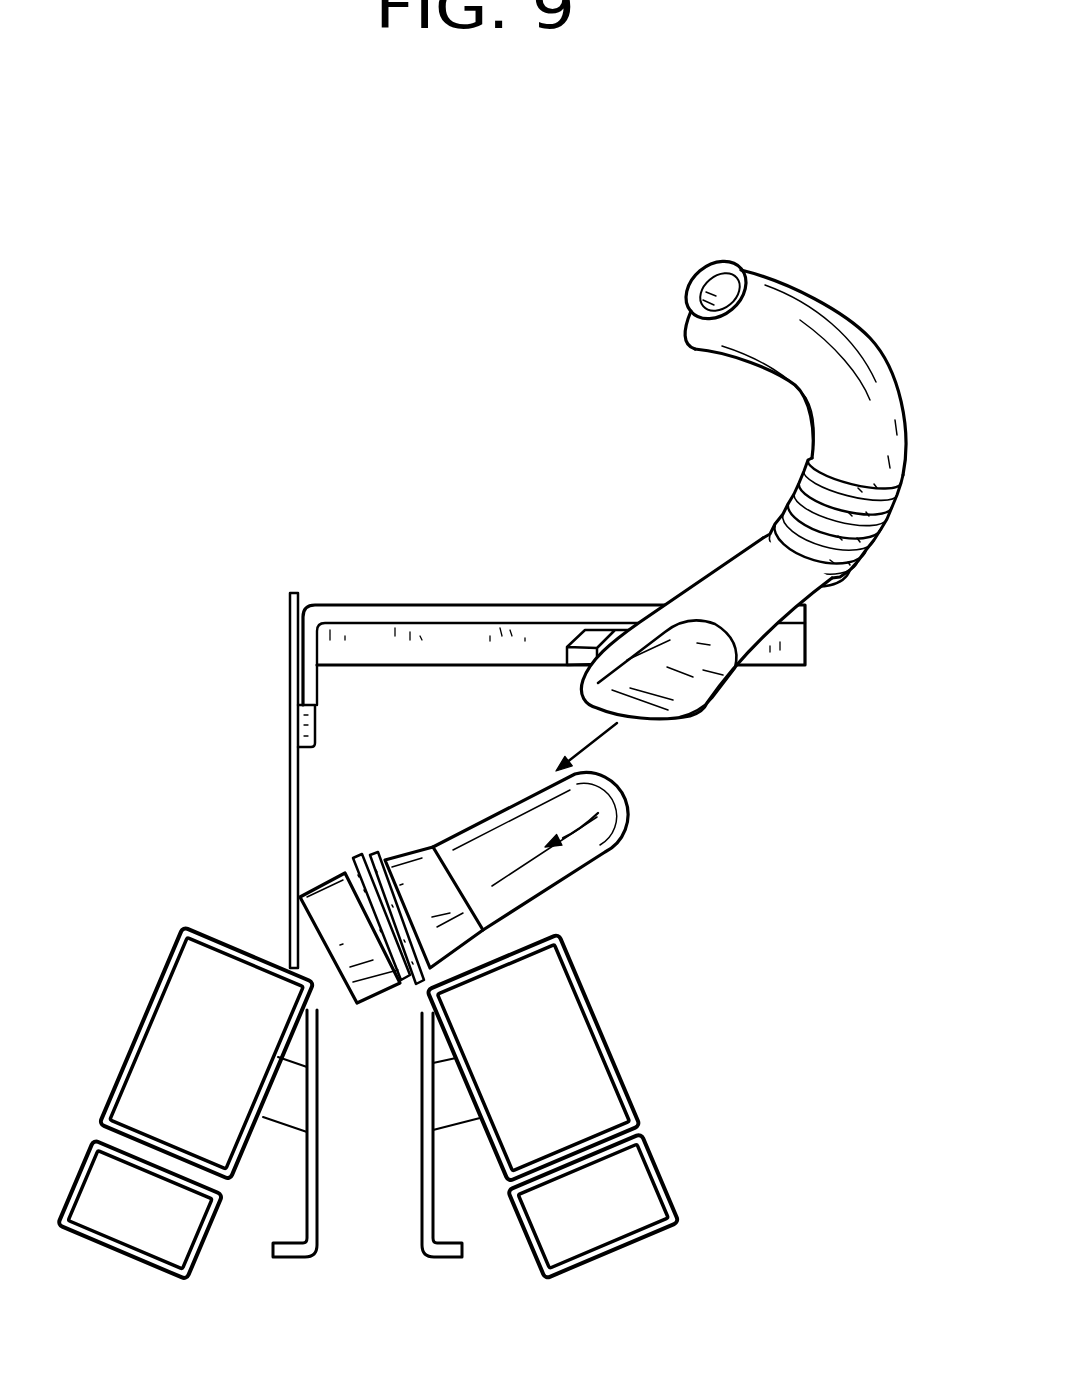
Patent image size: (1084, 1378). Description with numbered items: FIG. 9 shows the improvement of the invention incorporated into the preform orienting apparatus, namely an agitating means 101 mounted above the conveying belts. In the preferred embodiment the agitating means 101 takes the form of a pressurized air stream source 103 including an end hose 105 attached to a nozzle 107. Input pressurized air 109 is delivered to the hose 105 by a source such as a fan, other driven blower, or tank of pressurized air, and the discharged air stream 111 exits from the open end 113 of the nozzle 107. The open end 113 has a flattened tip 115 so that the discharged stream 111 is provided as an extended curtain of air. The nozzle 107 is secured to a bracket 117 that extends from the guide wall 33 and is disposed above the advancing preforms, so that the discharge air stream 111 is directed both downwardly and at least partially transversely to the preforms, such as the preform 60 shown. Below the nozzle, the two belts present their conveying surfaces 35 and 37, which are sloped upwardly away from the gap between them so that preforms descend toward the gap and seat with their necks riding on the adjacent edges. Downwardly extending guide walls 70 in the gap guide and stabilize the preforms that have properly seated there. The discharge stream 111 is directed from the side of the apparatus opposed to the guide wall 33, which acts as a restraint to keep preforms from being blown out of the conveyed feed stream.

The guard edge 33 is at (290, 718).
The conveying surface 35 is at (232, 937).
The conveying surface 37 is at (557, 927).
The preform 60 is at (618, 805).
The guide walls 70 is at (430, 1185).
The agitating means 101 is at (628, 523).
The pressurized air stream source 103 is at (655, 390).
The end hose 105 is at (830, 437).
The nozzle 107 is at (732, 678).
The input pressurized air 109 is at (638, 270).
The discharged air stream 111 is at (578, 733).
The open end 113 is at (597, 705).
The flattened tip 115 is at (688, 695).
The bracket 117 is at (447, 605).